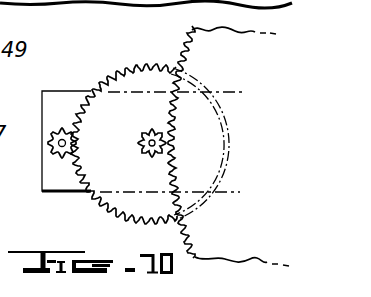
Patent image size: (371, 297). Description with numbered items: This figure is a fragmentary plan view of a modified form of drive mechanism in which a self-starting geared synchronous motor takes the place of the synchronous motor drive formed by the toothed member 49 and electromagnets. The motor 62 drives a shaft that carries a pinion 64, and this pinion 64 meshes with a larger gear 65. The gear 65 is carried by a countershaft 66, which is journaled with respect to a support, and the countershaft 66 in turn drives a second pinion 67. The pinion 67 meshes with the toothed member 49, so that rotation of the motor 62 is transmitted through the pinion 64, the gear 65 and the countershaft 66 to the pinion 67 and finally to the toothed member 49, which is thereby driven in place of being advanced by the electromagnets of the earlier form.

The toothed member 49 is at (186, 61).
The motor 62 is at (65, 184).
The pinion 64 is at (57, 131).
The gear 65 is at (130, 86).
The countershaft 66 is at (155, 157).
The pinion 67 is at (142, 137).